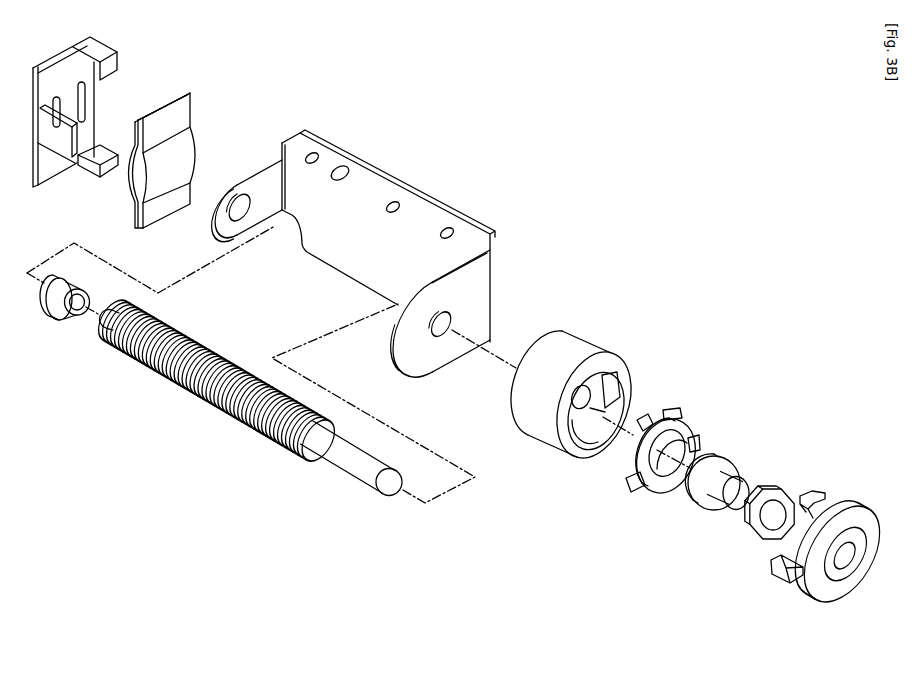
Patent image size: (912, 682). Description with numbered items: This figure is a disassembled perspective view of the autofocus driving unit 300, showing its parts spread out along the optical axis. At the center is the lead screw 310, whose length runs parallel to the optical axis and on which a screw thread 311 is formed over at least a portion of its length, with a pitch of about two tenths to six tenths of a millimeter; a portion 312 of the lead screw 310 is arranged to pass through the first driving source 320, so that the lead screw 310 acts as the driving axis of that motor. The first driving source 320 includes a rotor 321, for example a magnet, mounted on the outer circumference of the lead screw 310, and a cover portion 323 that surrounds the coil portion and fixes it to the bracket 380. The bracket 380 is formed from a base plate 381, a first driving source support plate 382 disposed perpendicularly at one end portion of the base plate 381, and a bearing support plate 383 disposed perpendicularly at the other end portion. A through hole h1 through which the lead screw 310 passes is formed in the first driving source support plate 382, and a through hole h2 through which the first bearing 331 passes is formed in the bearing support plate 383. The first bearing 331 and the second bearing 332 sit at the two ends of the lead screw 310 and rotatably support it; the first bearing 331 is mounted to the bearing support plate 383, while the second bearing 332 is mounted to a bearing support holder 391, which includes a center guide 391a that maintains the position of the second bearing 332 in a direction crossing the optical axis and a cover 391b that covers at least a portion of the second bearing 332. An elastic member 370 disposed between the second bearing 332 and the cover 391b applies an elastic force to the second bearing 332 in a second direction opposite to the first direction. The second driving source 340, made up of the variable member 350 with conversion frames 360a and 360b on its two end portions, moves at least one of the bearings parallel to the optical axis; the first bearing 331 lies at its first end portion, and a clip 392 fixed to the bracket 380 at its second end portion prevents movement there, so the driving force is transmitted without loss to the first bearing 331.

The autofocus driving unit 300 is at (751, 198).
The lead screw 310 is at (204, 406).
The screw thread 311 is at (171, 377).
The portion of the lead screw 312 is at (327, 457).
The first driving source 320 is at (588, 337).
The rotor 321 is at (597, 395).
The cover portion 323 is at (600, 357).
The first bearing 331 is at (55, 305).
The second bearing 332 is at (731, 460).
The second driving source 340 is at (184, 75).
The variable member 350 is at (163, 110).
The conversion frame 360a is at (140, 120).
The conversion frame 360b is at (185, 97).
The elastic member 370 is at (782, 490).
The bracket 380 is at (420, 183).
The base plate 381 is at (373, 188).
The first driving source support plate 382 is at (468, 258).
The bearing support plate 383 is at (264, 165).
The bearing support holder 391 is at (746, 612).
The center guide 391a is at (652, 490).
The cover 391b is at (774, 582).
The clip 392 is at (57, 57).
The through hole h1 is at (448, 322).
The through hole h2 is at (238, 203).